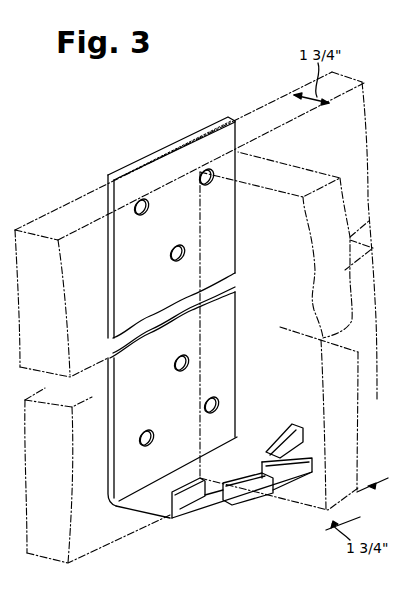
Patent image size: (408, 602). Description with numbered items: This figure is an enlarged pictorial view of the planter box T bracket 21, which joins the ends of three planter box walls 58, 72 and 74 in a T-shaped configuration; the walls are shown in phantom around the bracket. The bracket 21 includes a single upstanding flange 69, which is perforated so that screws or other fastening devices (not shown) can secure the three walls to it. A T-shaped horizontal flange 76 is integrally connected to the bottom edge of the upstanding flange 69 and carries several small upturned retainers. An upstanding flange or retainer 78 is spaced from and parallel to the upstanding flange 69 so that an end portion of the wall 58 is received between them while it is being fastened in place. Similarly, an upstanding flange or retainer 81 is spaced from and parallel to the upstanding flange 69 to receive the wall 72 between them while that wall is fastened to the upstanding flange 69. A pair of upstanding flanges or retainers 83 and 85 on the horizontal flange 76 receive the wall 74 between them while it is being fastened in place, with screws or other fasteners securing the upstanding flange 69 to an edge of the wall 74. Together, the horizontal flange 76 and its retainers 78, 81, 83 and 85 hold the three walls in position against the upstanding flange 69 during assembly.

The T bracket 21 is at (178, 138).
The planter box wall 58 is at (271, 113).
The upstanding flange 69 is at (141, 161).
The planter box wall 72 is at (53, 228).
The planter box wall 74 is at (284, 178).
The T-shaped horizontal flange 76 is at (152, 496).
The upstanding flange or retainer 78 is at (293, 441).
The upstanding flange or retainer 81 is at (193, 501).
The upstanding flange or retainer 83 is at (303, 453).
The upstanding flange or retainer 85 is at (252, 497).